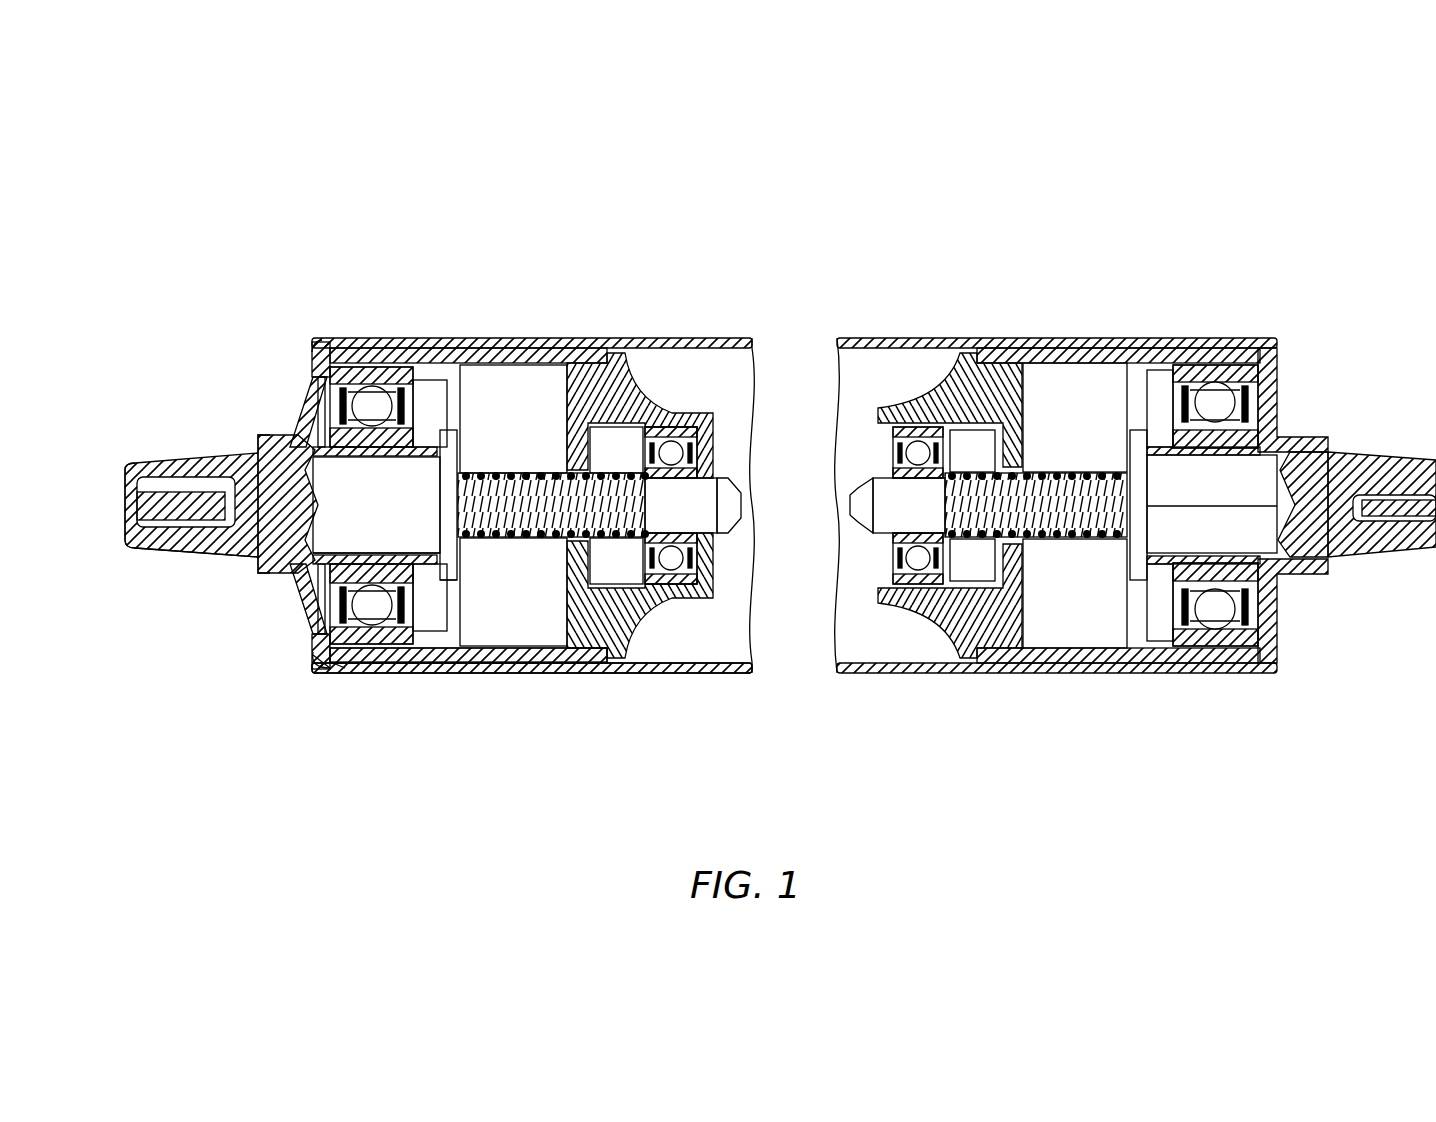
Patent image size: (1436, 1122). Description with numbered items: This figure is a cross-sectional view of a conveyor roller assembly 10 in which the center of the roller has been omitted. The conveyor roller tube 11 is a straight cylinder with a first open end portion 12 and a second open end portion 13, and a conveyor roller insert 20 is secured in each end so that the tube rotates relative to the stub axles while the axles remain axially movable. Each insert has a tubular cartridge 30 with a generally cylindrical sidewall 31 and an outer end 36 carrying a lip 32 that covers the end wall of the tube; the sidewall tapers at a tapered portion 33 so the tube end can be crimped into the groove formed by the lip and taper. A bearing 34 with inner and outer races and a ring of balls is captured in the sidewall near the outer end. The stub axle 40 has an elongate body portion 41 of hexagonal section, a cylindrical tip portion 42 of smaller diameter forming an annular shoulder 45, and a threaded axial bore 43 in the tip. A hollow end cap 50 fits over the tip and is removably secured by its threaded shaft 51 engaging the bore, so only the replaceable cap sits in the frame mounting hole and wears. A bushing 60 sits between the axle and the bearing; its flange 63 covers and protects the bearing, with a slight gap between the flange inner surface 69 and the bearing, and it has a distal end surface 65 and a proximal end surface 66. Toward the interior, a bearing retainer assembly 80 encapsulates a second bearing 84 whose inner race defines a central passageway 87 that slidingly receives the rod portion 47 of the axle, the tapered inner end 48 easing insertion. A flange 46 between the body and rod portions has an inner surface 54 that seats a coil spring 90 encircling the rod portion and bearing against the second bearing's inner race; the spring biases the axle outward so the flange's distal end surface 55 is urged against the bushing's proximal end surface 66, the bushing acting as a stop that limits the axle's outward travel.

The conveyor roller assembly 10 is at (980, 180).
The conveyor roller tube 11 is at (507, 338).
The first open end portion 12 is at (327, 342).
The second open end portion 13 is at (1262, 343).
The conveyor roller insert 20 is at (713, 630).
The tubular cartridge 30 is at (417, 350).
The cylindrical sidewall 31 is at (460, 670).
The lip 32 is at (340, 670).
The tapered portion 33 is at (343, 668).
The bearing 34 is at (397, 670).
The outer end 36 is at (310, 358).
The stub axle 40 is at (347, 523).
The elongate body portion 41 is at (390, 493).
The cylindrical tip portion 42 is at (156, 462).
The threaded axial bore 43 is at (205, 495).
The annular shoulder 45 is at (253, 467).
The flange 46 is at (450, 437).
The rod portion 47 is at (680, 508).
The inner end 48 is at (727, 497).
The hollow end cap 50 is at (207, 560).
The threaded shaft 51 is at (168, 548).
The inner surface 54 is at (468, 452).
The distal end surface 55 is at (436, 534).
The bushing 60 is at (300, 413).
The flange 63 is at (313, 597).
The distal end surface 65 is at (262, 555).
The proximal end surface 66 is at (443, 563).
The inner surface 69 is at (313, 662).
The bearing retainer assembly 80 is at (650, 382).
The second bearing 84 is at (680, 433).
The central passageway 87 is at (700, 490).
The coil spring 90 is at (513, 540).